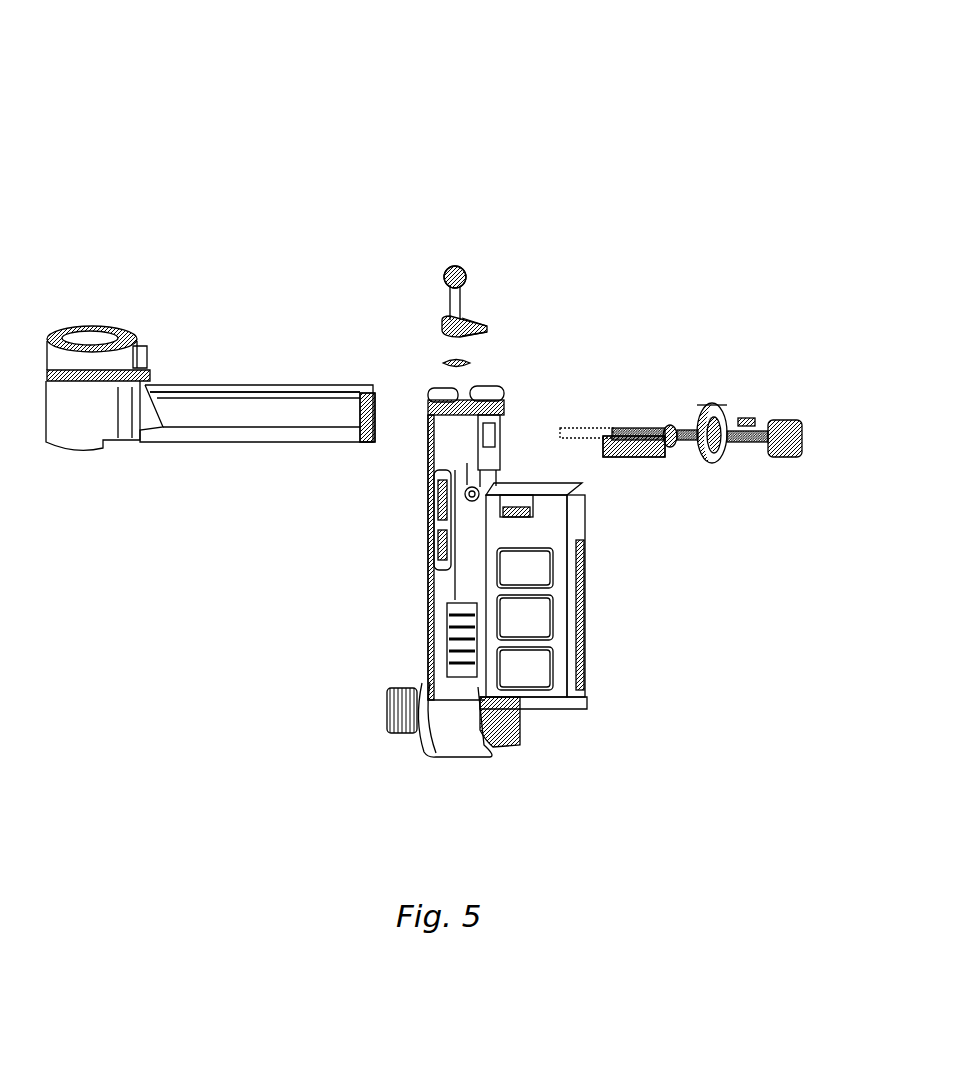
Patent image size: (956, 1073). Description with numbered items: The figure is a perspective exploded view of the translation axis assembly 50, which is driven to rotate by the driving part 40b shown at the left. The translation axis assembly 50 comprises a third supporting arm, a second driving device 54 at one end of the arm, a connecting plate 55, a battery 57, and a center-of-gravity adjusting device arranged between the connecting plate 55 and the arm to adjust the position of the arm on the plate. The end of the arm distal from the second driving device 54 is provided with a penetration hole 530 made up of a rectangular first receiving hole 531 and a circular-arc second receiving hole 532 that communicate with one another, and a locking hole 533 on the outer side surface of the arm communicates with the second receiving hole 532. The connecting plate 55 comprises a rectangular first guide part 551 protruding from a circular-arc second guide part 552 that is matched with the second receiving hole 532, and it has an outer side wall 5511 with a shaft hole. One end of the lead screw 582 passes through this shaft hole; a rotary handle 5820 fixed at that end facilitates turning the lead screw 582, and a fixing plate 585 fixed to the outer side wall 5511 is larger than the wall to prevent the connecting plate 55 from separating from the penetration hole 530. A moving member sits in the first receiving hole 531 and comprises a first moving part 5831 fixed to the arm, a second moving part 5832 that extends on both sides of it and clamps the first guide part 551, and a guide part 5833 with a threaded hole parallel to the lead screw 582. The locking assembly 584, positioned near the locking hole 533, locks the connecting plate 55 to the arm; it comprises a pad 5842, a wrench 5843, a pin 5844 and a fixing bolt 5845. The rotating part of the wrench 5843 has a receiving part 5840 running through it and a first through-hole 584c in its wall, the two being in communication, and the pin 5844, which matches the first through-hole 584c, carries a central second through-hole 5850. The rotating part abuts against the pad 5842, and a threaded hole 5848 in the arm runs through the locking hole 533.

The translation axis assembly 50 is at (410, 48).
The driving part 40b is at (93, 423).
The connecting plate 55 is at (236, 538).
The first guide part 551 is at (222, 433).
The second guide part 552 is at (258, 410).
The outer side wall 5511 is at (367, 440).
The locking hole 533 is at (426, 468).
The threaded hole 5848 is at (458, 400).
The battery 57 is at (562, 582).
The second driving device 54 is at (462, 718).
The locking assembly 584 is at (528, 275).
The second through-hole 5850 is at (452, 267).
The fixing bolt 5845 is at (443, 305).
The pin 5844 is at (465, 280).
The receiving part 5840 is at (458, 338).
The wrench 5843 is at (470, 320).
The first through-hole 584c is at (485, 330).
The pad 5842 is at (443, 363).
The penetration hole 530 is at (698, 455).
The first receiving hole 531 is at (510, 433).
The second receiving hole 532 is at (508, 408).
The lead screw 582 is at (634, 430).
The second moving part 5832 is at (668, 458).
The guide part 5833 is at (666, 426).
The fixing plate 585 is at (722, 401).
The rotary handle 5820 is at (802, 433).
The first moving part 5831 is at (693, 462).